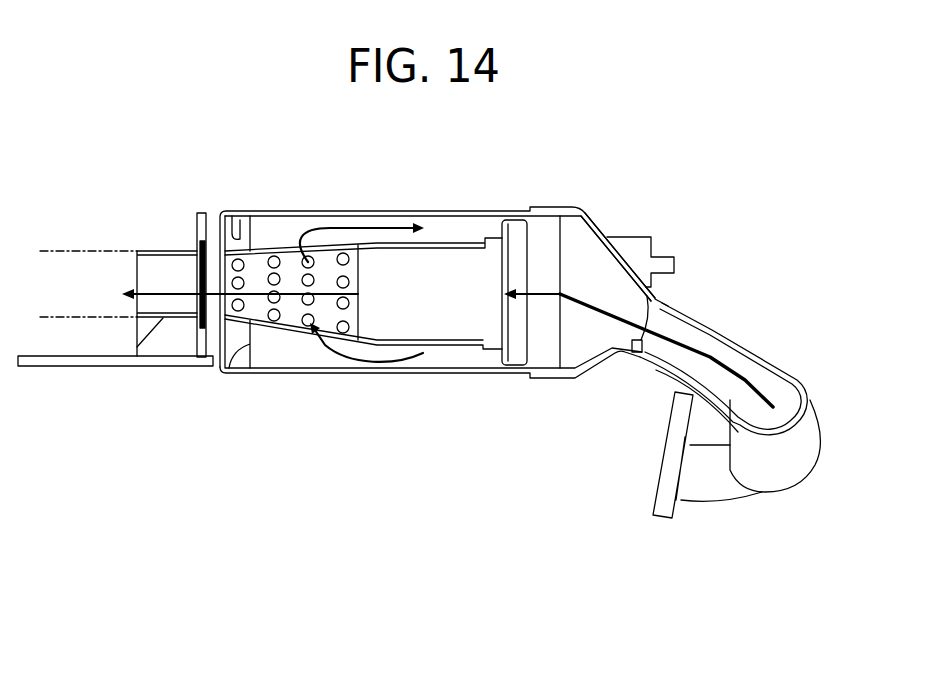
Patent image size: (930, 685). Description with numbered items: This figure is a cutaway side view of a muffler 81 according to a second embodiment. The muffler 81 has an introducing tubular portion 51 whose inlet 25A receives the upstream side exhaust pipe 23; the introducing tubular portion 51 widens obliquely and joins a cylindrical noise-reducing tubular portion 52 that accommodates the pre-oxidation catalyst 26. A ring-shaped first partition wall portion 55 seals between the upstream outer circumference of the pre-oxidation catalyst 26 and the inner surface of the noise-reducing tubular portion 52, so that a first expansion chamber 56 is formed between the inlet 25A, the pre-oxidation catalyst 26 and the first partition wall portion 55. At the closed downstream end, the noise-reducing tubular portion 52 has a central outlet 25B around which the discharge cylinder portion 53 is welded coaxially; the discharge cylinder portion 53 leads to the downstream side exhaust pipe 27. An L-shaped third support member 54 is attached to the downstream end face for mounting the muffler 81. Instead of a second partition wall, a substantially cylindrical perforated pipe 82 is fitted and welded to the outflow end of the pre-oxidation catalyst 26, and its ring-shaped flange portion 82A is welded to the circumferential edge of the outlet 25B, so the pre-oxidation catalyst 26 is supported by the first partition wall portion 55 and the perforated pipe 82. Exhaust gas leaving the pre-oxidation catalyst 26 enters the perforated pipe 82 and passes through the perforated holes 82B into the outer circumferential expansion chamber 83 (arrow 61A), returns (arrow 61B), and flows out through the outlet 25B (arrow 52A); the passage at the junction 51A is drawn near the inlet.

The upstream side exhaust pipe 23 is at (773, 357).
The inlet 25A is at (632, 346).
The outlet 25B is at (196, 273).
The pre-oxidation catalyst 26 is at (468, 346).
The downstream side exhaust pipe 27 is at (60, 250).
The introducing tubular portion 51 is at (597, 221).
The junction flow passage 51A is at (652, 298).
The noise-reducing tubular portion 52 is at (297, 213).
The arrow 52A is at (293, 298).
The discharge cylinder portion 53 is at (147, 319).
The third support member 54 is at (55, 367).
The first partition wall portion 55 is at (513, 228).
The first expansion chamber 56 is at (613, 267).
The arrow 61A is at (337, 228).
The arrow 61B is at (416, 358).
The muffler 81 is at (268, 176).
The perforated pipe 82 is at (224, 376).
The flange portion 82A is at (233, 230).
The perforated holes 82B is at (350, 303).
The outer circumferential expansion chamber 83 is at (266, 342).